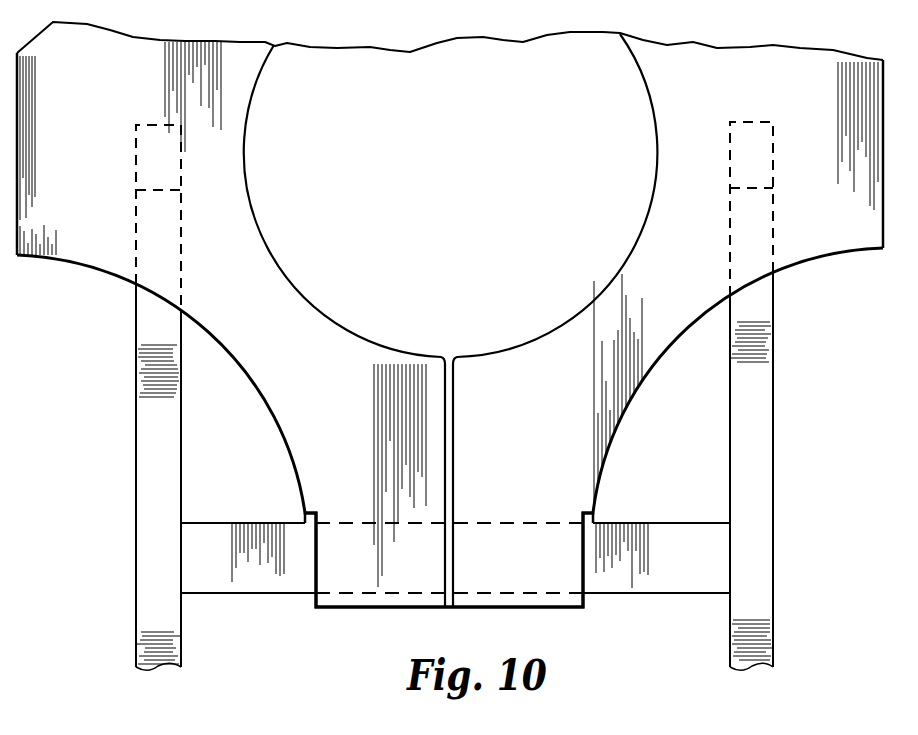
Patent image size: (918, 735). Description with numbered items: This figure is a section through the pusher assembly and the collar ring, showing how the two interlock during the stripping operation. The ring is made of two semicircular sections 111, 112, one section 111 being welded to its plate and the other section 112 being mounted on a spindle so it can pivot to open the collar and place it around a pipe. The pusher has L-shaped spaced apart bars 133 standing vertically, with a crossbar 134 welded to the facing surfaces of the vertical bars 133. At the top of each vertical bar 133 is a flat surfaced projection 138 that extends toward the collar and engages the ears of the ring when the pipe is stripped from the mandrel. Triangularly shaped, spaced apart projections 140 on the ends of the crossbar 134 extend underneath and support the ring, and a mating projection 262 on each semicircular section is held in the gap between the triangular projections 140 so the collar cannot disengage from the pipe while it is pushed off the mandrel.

The semicircular section 111 is at (858, 240).
The semicircular section 112 is at (80, 243).
The vertical bar 133 is at (140, 456).
The crossbar 134 is at (692, 576).
The flat surfaced projection 138 is at (136, 186).
The triangularly shaped projection 140 is at (284, 592).
The mating projection 262 is at (344, 553).